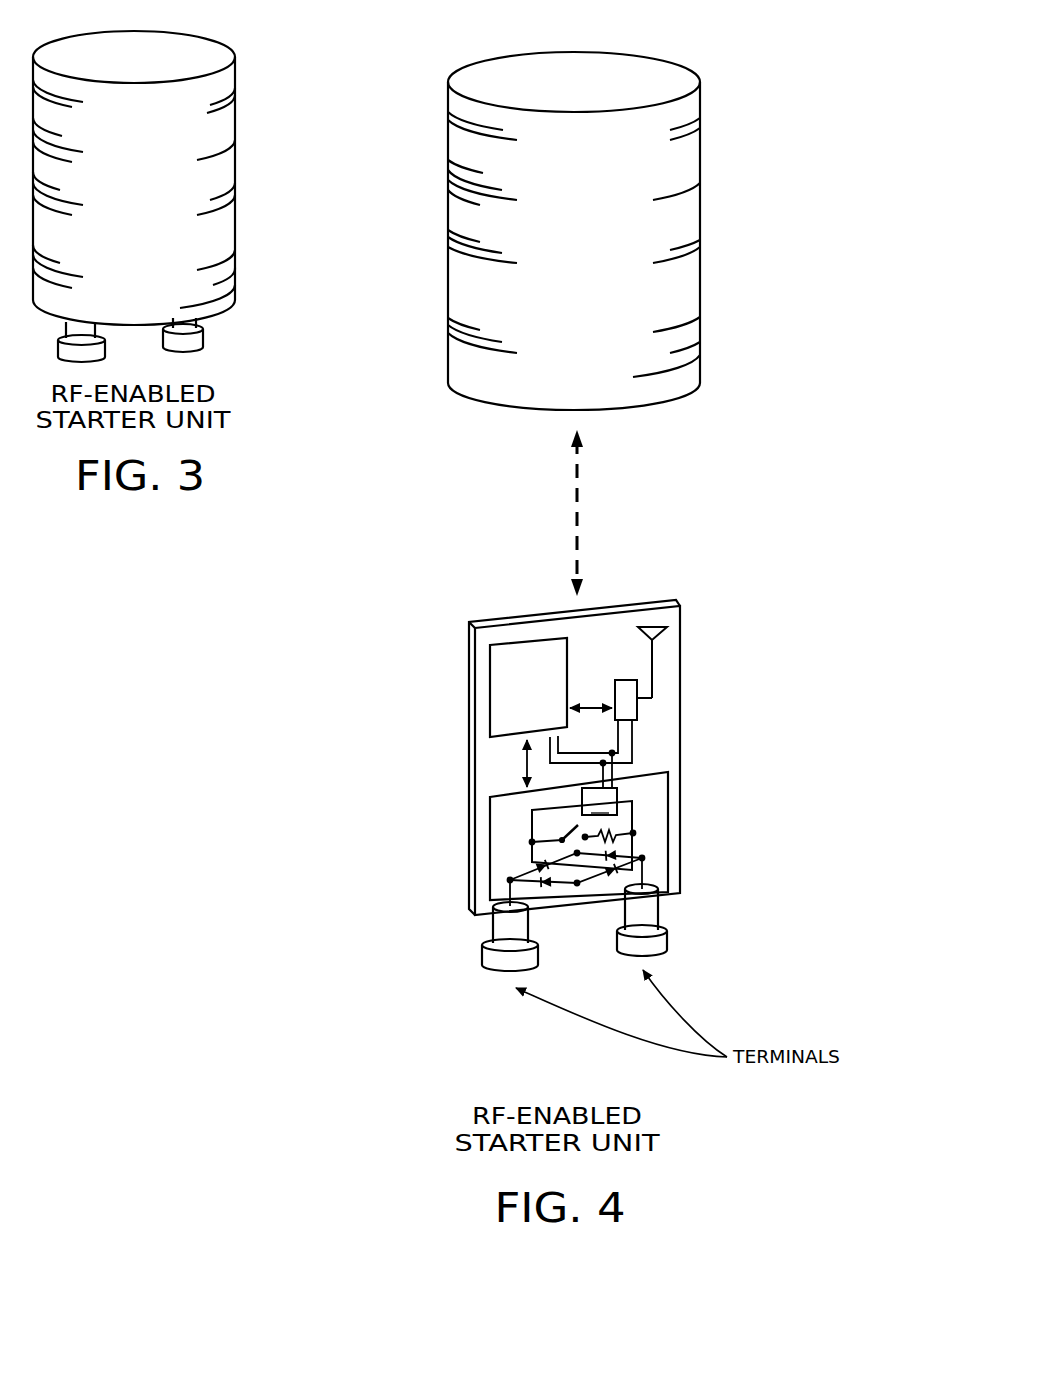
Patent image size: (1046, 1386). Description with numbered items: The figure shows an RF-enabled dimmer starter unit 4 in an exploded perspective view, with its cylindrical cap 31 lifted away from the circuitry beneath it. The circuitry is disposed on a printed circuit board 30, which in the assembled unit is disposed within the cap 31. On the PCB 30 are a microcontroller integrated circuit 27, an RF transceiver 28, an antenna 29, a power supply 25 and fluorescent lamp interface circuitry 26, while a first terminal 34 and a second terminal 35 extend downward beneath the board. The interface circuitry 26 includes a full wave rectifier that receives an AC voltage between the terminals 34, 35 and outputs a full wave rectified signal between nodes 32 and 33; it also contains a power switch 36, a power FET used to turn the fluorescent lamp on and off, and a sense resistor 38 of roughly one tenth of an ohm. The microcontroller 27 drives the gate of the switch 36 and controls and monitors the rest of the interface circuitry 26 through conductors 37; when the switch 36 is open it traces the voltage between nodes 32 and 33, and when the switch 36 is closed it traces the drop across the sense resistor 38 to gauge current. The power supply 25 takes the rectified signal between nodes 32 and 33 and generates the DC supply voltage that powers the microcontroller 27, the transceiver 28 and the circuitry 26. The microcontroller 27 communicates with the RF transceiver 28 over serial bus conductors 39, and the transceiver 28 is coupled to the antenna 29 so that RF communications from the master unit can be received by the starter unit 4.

In FIG. 3, the dimmer starter unit 4 is at (331, 64).
In FIG. 4, the dimmer starter unit 4 is at (688, 494).
In FIG. 4, the cylindrical cap 31 is at (566, 233).
In FIG. 4, the printed circuit board 30 is at (619, 734).
In FIG. 4, the antenna 29 is at (661, 662).
In FIG. 4, the RF transceiver 28 is at (651, 717).
In FIG. 4, the microcontroller integrated circuit 27 is at (490, 702).
In FIG. 4, the serial bus conductors 39 is at (588, 715).
In FIG. 4, the conductors 37 is at (528, 767).
In FIG. 4, the power supply 25 is at (668, 790).
In FIG. 4, the fluorescent lamp interface circuitry 26 is at (354, 856).
In FIG. 4, the power switch 36 is at (573, 838).
In FIG. 4, the node 32 is at (532, 843).
In FIG. 4, the sense resistor 38 is at (606, 836).
In FIG. 4, the node 33 is at (649, 830).
In FIG. 4, the first terminal 34 is at (482, 960).
In FIG. 4, the second terminal 35 is at (617, 945).